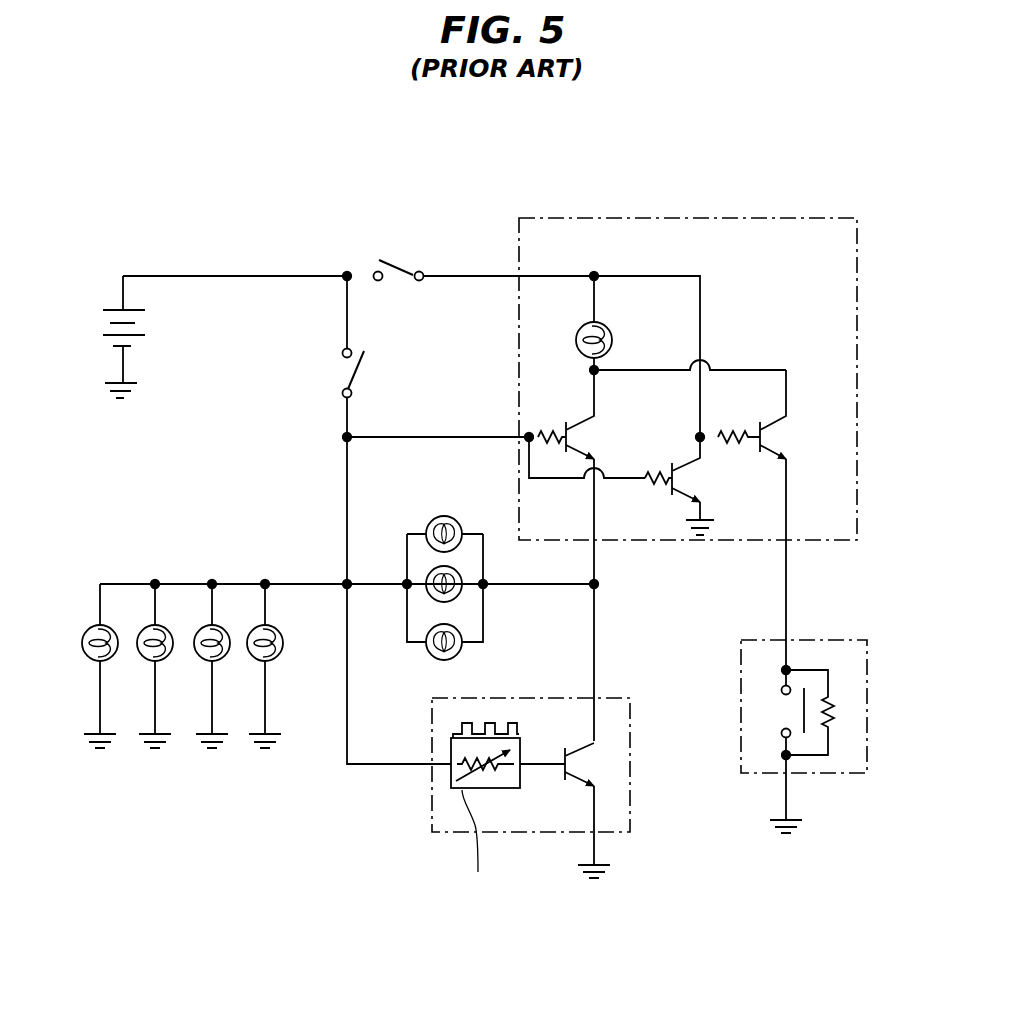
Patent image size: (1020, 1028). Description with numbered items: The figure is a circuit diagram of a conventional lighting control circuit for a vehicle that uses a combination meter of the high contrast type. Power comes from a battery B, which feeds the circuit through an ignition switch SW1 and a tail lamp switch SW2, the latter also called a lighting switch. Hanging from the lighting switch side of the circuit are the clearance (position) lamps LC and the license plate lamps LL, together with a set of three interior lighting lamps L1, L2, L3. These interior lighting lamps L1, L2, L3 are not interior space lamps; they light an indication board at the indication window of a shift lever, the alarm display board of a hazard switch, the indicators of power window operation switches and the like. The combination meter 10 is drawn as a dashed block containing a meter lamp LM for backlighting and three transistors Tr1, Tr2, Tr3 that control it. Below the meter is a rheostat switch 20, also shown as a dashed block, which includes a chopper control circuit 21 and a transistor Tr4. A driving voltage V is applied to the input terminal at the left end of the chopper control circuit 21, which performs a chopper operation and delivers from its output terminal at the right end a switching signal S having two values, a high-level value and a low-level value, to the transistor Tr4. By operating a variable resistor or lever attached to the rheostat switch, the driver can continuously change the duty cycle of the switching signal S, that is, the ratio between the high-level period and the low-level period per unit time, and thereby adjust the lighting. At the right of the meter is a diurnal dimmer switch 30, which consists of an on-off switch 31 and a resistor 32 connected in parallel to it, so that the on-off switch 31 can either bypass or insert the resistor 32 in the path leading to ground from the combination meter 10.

The battery B is at (104, 322).
The ignition switch SW1 is at (403, 258).
The tail lamp switch SW2 is at (338, 372).
The combination meter 10 is at (852, 216).
The meter lamp LM is at (614, 339).
The transistor Tr1 is at (566, 432).
The transistor Tr2 is at (670, 470).
The transistor Tr3 is at (760, 428).
The transistor Tr4 is at (588, 760).
The interior lighting lamp L1 is at (448, 516).
The interior lighting lamp L2 is at (463, 574).
The interior lighting lamp L3 is at (463, 629).
The clearance lamps LC is at (140, 627).
The license plate lamps LL is at (254, 662).
The switching signal S is at (535, 758).
The rheostat switch 20 is at (490, 790).
The chopper control circuit 21 is at (505, 790).
The driving voltage V is at (473, 852).
The diurnal dimmer switch 30 is at (868, 656).
The on-off switch 31 is at (803, 735).
The resistor 32 is at (838, 705).